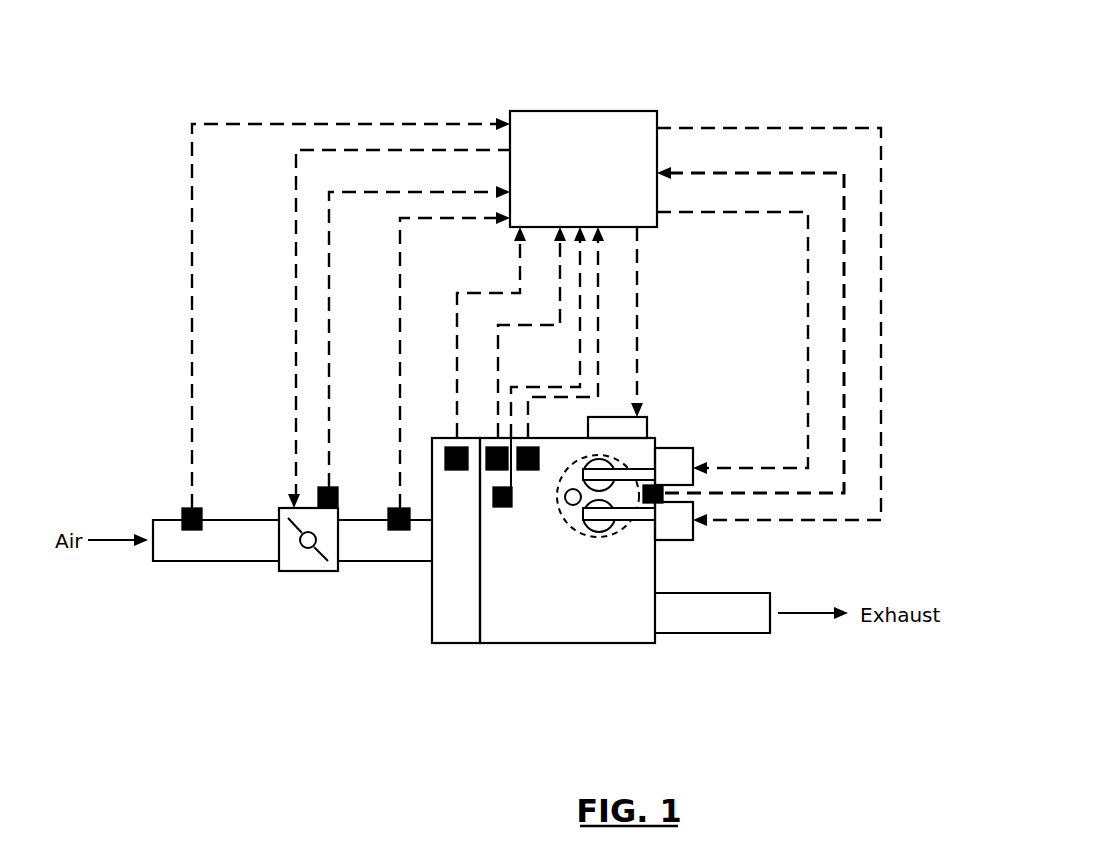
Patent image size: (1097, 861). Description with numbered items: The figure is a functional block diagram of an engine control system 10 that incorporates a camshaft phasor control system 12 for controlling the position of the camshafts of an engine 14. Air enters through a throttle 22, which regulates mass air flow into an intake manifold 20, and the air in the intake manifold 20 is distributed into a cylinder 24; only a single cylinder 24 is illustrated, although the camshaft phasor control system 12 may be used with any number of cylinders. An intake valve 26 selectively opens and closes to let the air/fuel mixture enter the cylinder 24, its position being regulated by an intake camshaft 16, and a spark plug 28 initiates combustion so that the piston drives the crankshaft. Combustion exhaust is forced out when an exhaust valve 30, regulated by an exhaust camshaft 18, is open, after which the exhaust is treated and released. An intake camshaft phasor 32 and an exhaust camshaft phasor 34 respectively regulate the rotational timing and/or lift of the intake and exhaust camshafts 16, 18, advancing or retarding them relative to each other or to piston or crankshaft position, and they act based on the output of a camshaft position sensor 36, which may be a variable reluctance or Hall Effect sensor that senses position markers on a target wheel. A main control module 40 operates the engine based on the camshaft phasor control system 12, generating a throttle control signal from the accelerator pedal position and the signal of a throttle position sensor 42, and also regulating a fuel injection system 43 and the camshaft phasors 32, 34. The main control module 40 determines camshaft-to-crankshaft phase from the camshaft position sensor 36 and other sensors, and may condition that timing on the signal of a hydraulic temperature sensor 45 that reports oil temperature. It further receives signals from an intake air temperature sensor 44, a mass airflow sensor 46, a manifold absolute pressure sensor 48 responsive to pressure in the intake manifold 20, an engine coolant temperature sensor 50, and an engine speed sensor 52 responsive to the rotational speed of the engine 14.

The engine control system 10 is at (282, 55).
The camshaft phasor control system 12 is at (792, 77).
The engine 14 is at (610, 643).
The intake camshaft 16 is at (648, 521).
The exhaust camshaft 18 is at (633, 480).
The intake manifold 20 is at (460, 643).
The throttle 22 is at (328, 572).
The cylinder 24 is at (582, 538).
The intake valve 26 is at (598, 533).
The spark plug 28 is at (572, 513).
The exhaust valve 30 is at (565, 455).
The intake camshaft phasor 32 is at (682, 542).
The exhaust camshaft phasor 34 is at (693, 452).
The camshaft position sensor 36 is at (658, 502).
The main control module 40 is at (597, 111).
The throttle position sensor 42 is at (320, 488).
The fuel injection system 43 is at (648, 427).
The intake air temperature sensor 44 is at (185, 512).
The hydraulic temperature sensor 45 is at (495, 502).
The mass airflow sensor 46 is at (395, 507).
The manifold absolute pressure sensor 48 is at (455, 447).
The engine coolant temperature sensor 50 is at (495, 447).
The engine speed sensor 52 is at (527, 447).